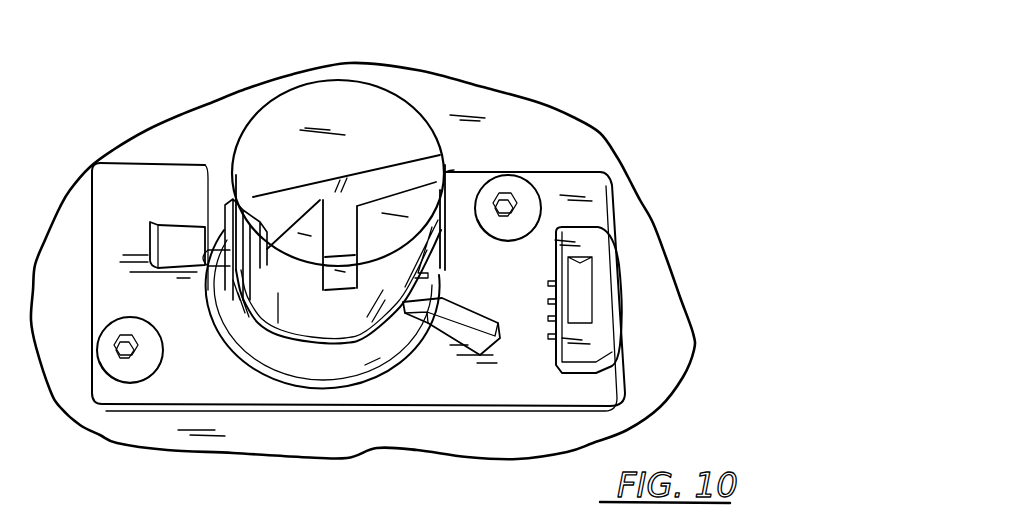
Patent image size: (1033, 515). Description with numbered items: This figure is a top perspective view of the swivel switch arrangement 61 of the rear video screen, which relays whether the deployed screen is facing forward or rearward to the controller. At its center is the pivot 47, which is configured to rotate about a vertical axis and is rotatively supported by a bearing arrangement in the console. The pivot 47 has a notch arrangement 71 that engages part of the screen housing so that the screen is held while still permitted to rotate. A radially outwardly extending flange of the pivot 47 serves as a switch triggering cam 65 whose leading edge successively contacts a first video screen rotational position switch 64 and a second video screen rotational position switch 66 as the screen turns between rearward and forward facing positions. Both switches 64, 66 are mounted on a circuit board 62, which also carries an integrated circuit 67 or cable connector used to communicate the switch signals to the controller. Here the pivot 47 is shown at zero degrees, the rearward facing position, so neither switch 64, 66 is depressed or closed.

The pivot 47 is at (399, 73).
The swivel switch arrangement 61 is at (484, 68).
The circuit board 62 is at (592, 201).
The first video screen rotational position switch 64 is at (171, 243).
The switch triggering cam 65 is at (222, 207).
The second video screen rotational position switch 66 is at (470, 322).
The integrated circuit 67 is at (610, 273).
The notch arrangement 71 is at (465, 171).